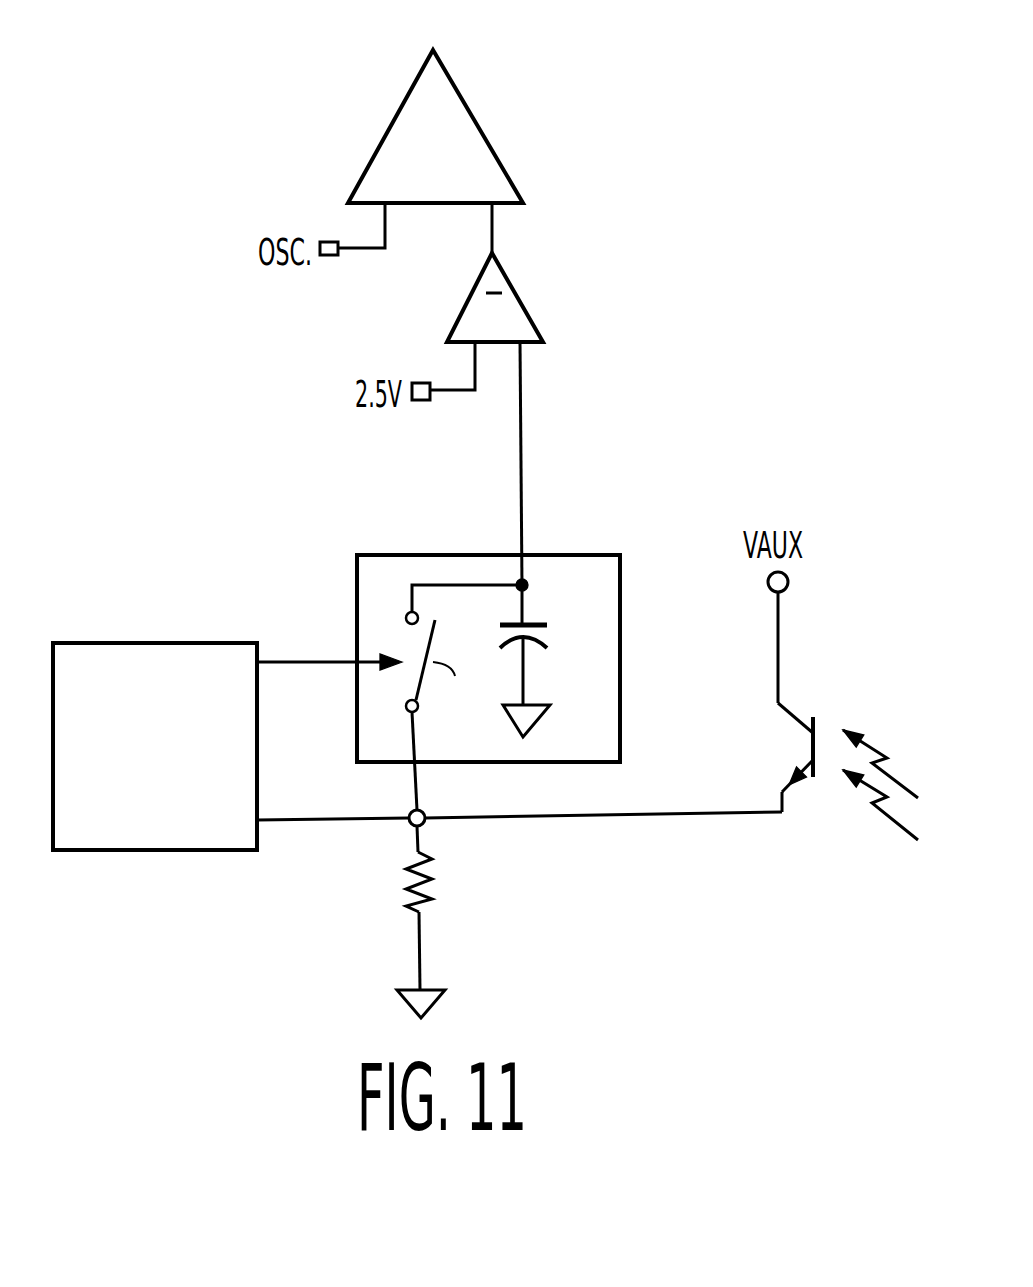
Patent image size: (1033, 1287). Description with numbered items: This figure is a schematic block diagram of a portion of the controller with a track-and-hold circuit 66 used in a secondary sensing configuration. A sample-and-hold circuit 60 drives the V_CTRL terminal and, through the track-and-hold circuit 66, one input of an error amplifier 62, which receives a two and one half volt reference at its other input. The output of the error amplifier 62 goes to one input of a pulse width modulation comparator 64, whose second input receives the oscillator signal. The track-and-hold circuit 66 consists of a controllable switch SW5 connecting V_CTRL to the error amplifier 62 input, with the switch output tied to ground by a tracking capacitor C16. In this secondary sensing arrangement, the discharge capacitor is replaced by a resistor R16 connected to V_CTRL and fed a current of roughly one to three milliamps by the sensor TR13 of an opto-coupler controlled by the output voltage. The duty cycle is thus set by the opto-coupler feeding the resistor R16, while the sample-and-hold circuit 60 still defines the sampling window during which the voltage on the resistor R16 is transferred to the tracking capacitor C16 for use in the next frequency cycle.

The sample-and-hold circuit 60 is at (157, 642).
The error amplifier 62 is at (525, 305).
The pulse width modulation (PWM) comparator 64 is at (482, 125).
The track-and-hold circuit 66 is at (516, 658).
The controllable switch SW5 is at (445, 669).
The tracking capacitor C16 is at (550, 664).
The resistor R16 is at (438, 922).
The sensor of an opto-coupler TR13 is at (815, 737).